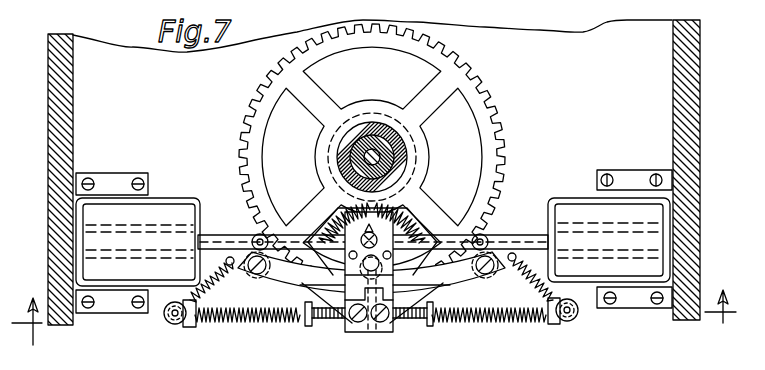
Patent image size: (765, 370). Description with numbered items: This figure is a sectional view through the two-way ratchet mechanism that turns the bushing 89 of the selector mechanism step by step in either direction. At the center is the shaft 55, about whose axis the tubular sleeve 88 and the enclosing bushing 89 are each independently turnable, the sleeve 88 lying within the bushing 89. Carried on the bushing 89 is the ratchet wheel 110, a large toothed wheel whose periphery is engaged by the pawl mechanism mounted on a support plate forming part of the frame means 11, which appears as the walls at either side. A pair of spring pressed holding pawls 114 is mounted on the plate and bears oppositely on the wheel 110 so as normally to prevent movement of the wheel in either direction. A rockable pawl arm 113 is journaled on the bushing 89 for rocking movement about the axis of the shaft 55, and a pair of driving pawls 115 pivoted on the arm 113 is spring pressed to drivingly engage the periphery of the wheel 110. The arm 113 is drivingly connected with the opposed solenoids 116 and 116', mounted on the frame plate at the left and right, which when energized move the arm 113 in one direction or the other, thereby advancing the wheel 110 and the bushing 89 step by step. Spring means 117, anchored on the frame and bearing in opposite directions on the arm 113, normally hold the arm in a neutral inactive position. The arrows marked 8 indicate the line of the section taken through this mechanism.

The section line arrows 8 is at (374, 317).
The frame means 11 is at (707, 227).
The shaft 55 is at (368, 116).
The tubular sleeve 88 is at (404, 156).
The bushing 89 is at (337, 156).
The ratchet wheel 110 is at (490, 100).
The pawl arm 113 is at (382, 332).
The holding pawls 114 is at (280, 280).
The driving pawls 115 is at (337, 297).
The solenoid 116 is at (610, 238).
The solenoid 116' is at (141, 242).
The spring means 117 is at (230, 320).